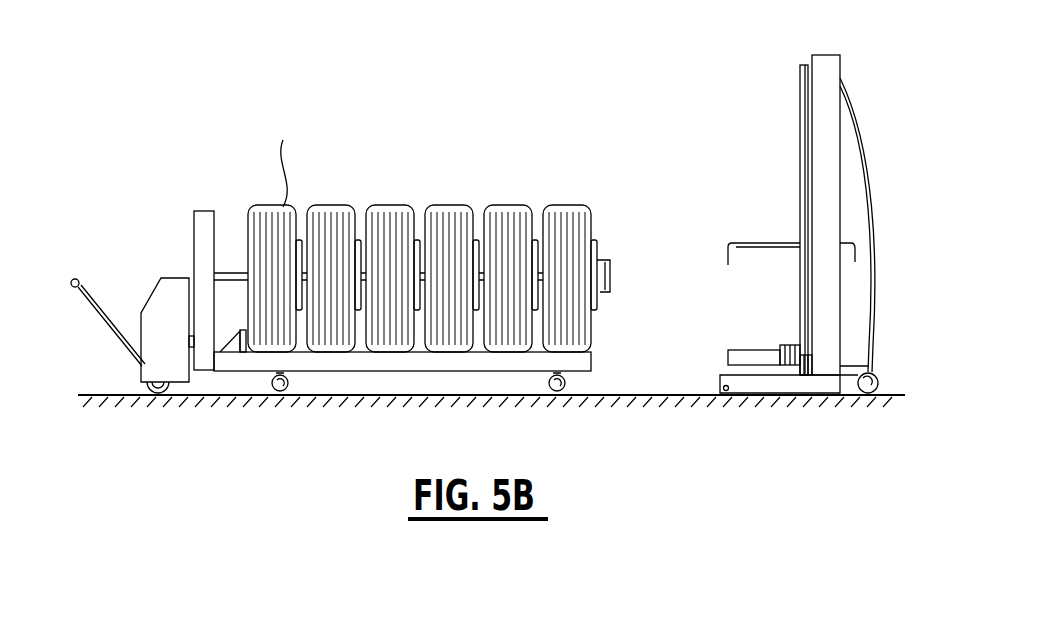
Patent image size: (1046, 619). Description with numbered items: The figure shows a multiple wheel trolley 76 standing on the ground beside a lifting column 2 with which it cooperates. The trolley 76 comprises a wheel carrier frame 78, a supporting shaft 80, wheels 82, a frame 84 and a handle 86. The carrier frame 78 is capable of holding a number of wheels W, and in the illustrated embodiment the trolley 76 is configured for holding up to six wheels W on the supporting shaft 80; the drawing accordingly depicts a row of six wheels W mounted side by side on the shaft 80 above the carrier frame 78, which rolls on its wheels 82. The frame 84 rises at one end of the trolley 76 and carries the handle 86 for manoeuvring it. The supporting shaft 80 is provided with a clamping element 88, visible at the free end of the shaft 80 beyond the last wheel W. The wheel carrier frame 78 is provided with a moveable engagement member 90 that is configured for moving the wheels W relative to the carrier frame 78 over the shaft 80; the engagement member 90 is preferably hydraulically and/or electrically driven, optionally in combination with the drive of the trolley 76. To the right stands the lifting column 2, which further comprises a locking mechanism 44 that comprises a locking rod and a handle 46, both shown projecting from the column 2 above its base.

The multiple wheel trolley 76 is at (150, 168).
The wheel carrier frame 78 is at (598, 364).
The supporting shaft 80 is at (228, 272).
The wheels 82 is at (158, 395).
The frame 84 is at (155, 296).
The handle 86 is at (80, 279).
The clamping element 88 is at (610, 290).
The moveable engagement member 90 is at (236, 350).
The lifting column 2 is at (866, 100).
The locking mechanism 44 is at (772, 243).
The handle 46 is at (853, 262).